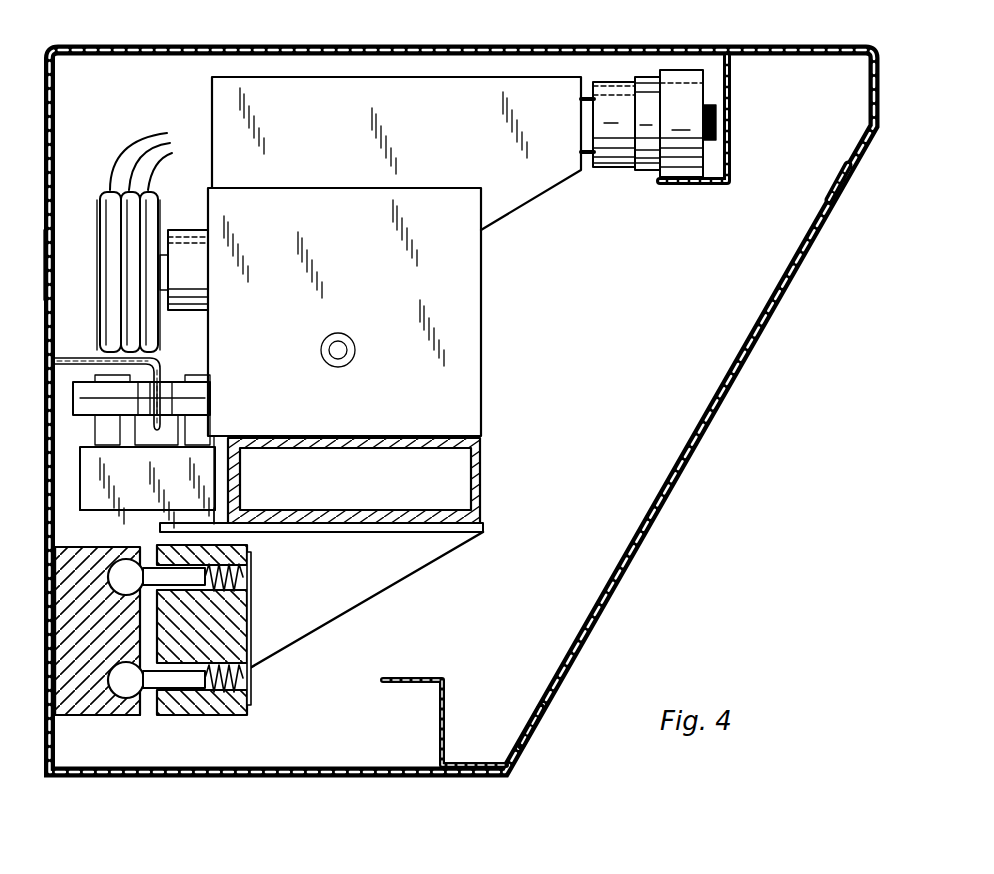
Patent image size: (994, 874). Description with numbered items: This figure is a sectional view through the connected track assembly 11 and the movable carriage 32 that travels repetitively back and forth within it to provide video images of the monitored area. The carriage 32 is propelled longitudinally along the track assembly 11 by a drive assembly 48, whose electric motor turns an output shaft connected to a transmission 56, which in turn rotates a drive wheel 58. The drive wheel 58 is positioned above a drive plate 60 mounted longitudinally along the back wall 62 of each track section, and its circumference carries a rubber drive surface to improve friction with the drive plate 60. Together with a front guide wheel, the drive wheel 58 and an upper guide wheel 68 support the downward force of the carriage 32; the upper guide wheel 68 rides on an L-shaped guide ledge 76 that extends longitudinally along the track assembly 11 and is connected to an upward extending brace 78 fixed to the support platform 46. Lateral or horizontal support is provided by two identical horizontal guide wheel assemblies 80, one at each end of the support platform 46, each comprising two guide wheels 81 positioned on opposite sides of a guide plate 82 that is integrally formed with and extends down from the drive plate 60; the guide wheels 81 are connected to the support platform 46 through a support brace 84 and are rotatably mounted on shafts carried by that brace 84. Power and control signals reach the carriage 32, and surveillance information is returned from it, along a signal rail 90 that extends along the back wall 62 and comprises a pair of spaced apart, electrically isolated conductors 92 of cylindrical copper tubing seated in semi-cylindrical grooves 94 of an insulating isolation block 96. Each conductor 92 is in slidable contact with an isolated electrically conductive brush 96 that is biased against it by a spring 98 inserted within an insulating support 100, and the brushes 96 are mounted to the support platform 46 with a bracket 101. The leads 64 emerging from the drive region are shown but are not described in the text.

The connected track assembly 11 is at (690, 495).
The movable carriage 32 is at (461, 567).
The support platform 46 is at (481, 479).
The drive assembly 48 is at (497, 278).
The transmission 56 is at (465, 340).
The drive wheel 58 is at (94, 208).
The drive plate 60 is at (66, 366).
The back wall 62 is at (55, 265).
The battery leads 64 is at (158, 159).
The upper guide wheel 68 is at (625, 186).
The L-shaped guide ledge 76 is at (710, 196).
The upward extending brace 78 is at (457, 98).
The horizontal guide wheel assembly 80 is at (68, 429).
The guide wheels 81 is at (198, 404).
The guide plate 82 is at (168, 368).
The support brace 84 is at (98, 508).
The signal rail 90 is at (79, 703).
The conductors 92 is at (56, 627).
The semi-cylindrical grooves 94 is at (56, 553).
The isolation block / electrically conductive brush 96 is at (257, 561).
The spring 98 is at (248, 660).
The support 100 is at (195, 708).
The bracket 101 is at (398, 595).